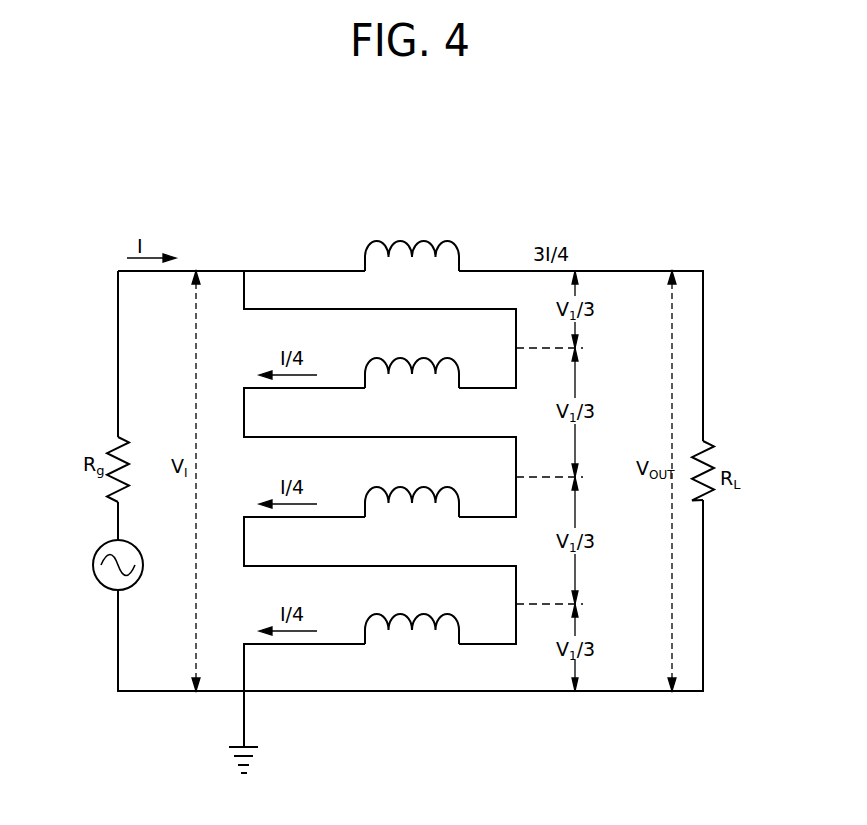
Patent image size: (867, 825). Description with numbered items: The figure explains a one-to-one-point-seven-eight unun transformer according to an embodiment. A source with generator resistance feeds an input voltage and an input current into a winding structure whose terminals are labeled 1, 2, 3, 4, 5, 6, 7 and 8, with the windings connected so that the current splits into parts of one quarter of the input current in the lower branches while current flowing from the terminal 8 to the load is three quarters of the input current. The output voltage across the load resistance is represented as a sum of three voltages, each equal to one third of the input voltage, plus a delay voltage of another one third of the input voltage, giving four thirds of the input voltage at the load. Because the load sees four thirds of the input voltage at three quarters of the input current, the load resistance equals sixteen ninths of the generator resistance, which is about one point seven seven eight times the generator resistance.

The first terminal of first coil 1 is at (403, 629).
The terminal 2 is at (487, 631).
The terminal 3 is at (403, 502).
The terminal 4 is at (487, 504).
The terminal 5 is at (403, 373).
The terminal 6 is at (487, 375).
The terminal 7 is at (403, 256).
The terminal 8 is at (487, 258).